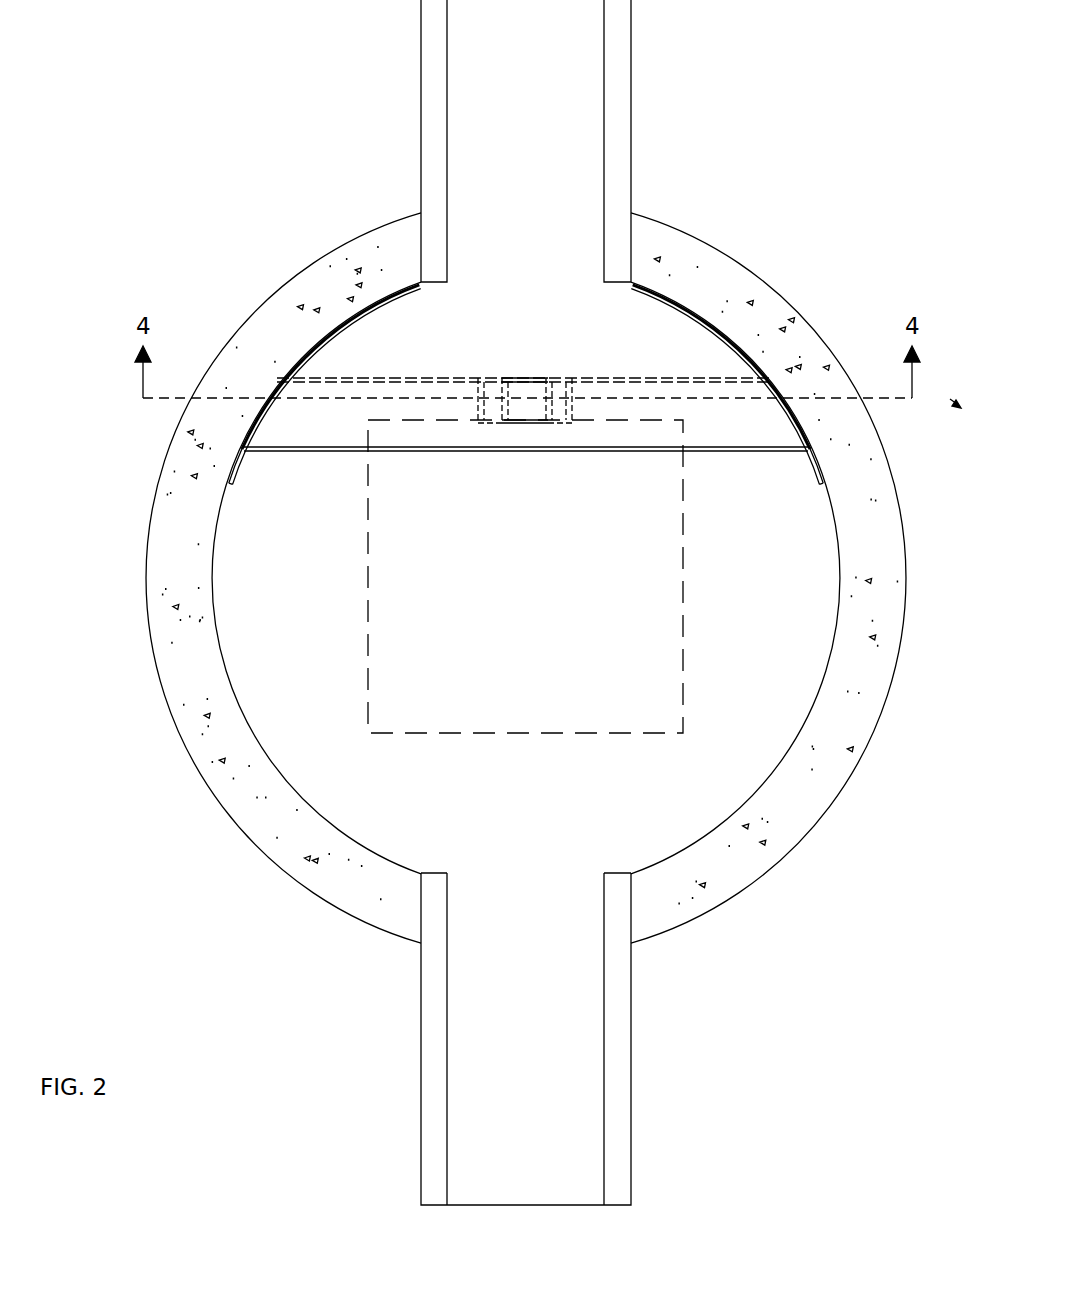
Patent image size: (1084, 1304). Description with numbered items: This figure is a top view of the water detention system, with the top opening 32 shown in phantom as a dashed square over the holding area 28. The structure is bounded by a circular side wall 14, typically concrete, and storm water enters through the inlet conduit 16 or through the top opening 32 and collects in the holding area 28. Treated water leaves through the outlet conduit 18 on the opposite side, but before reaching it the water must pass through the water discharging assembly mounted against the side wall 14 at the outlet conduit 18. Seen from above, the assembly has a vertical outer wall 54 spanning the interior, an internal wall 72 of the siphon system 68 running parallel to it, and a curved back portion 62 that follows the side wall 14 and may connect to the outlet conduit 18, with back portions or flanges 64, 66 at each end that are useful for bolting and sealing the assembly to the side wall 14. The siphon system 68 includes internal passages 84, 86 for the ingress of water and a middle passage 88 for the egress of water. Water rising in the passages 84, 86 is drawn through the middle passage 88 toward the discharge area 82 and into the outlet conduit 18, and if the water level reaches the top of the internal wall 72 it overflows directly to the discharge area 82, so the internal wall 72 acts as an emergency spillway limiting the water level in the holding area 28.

The side wall 14 is at (775, 840).
The inlet conduit 16 is at (563, 1121).
The outlet conduit 18 is at (545, 105).
The holding area 28 is at (550, 680).
The top opening 32 is at (683, 712).
The vertical outer wall 54 is at (553, 452).
The back portion 62 is at (686, 305).
The back portion or flange 64 is at (237, 478).
The back portion or flange 66 is at (809, 466).
The siphon system 68 is at (517, 437).
The internal wall 72 is at (693, 378).
The discharge area 82 is at (531, 300).
The internal passage 84 is at (495, 392).
The internal passage 86 is at (558, 390).
The middle passage 88 is at (528, 385).